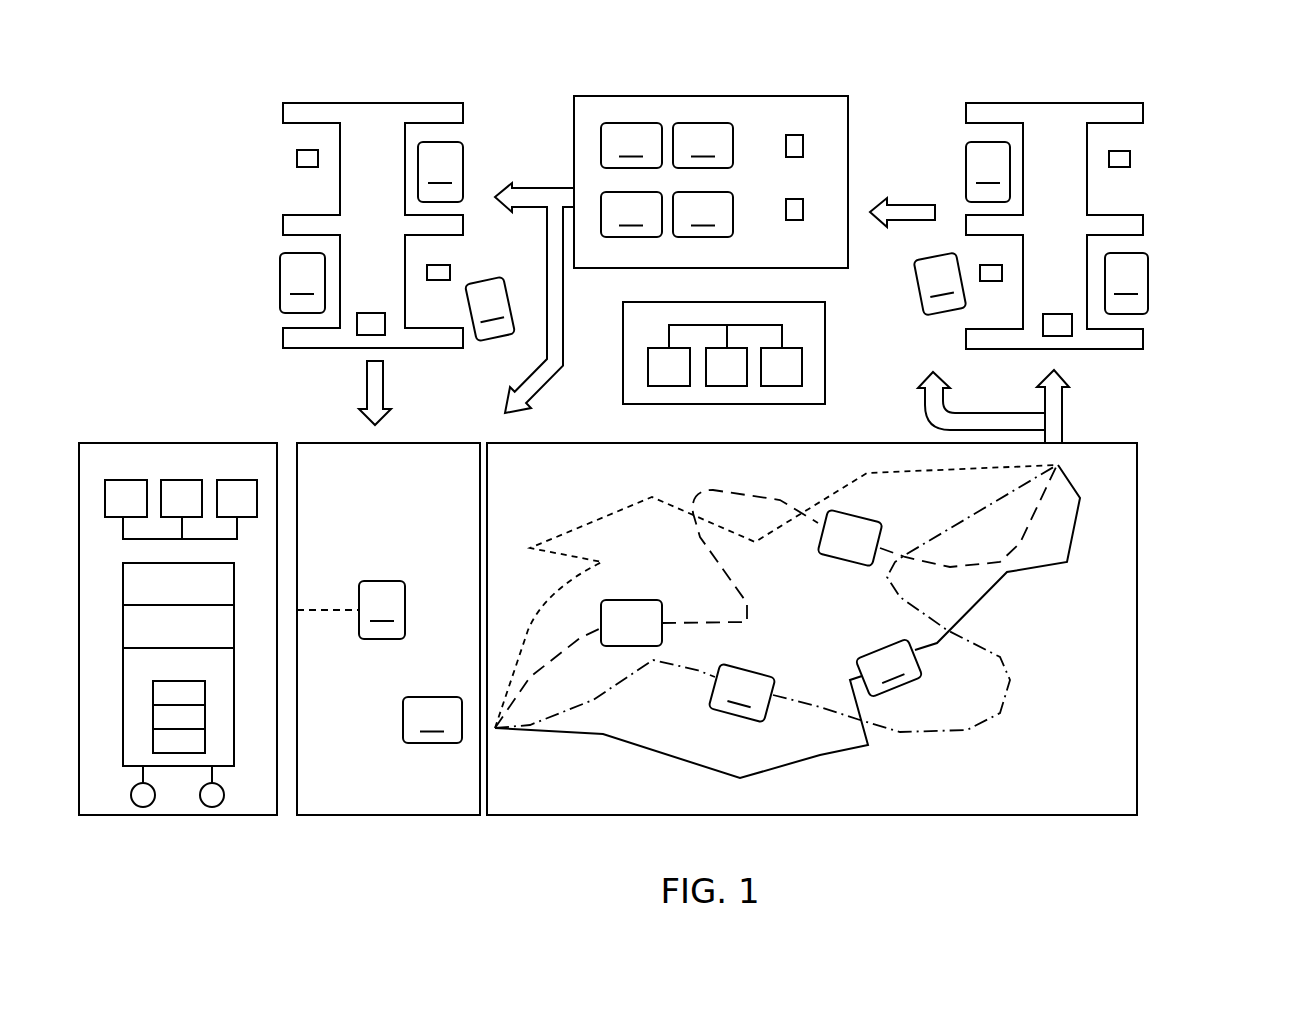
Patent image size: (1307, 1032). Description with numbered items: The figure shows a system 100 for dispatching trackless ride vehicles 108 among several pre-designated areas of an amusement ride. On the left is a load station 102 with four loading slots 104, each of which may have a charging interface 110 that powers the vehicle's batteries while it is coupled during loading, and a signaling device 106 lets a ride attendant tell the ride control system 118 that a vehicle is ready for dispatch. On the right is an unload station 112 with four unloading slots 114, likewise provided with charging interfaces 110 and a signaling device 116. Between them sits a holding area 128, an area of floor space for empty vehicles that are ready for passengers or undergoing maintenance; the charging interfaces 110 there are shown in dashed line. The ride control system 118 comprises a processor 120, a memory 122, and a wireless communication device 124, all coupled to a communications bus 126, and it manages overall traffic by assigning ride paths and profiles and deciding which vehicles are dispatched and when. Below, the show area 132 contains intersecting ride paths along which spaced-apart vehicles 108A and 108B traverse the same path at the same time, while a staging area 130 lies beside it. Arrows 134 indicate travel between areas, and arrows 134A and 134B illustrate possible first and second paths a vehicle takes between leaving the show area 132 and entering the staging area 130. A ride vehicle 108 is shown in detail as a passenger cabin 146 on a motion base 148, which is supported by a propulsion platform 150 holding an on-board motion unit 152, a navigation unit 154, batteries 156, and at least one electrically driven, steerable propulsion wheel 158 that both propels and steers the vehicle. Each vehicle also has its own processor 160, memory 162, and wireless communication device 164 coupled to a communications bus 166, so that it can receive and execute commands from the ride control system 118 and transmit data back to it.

The system 100 is at (1272, 114).
The load station 102 is at (447, 103).
The loading slot 104 is at (471, 129).
The signaling device 106 is at (372, 313).
The ride vehicle 108 is at (170, 472).
The ride vehicle 108A is at (614, 634).
The ride vehicle 108B is at (833, 550).
The charging interface 110 is at (297, 157).
The unload station 112 is at (1113, 103).
The unloading slot 114 is at (950, 128).
The signaling device 116 is at (1060, 314).
The ride control system 118 is at (825, 318).
The processor 120 is at (670, 386).
The memory 122 is at (727, 386).
The wireless communication device 124 is at (782, 386).
The communications bus 126 is at (698, 325).
The holding area 128 is at (718, 96).
The staging area 130 is at (393, 815).
The show area 132 is at (538, 815).
The path 134 is at (383, 386).
The first path 134A is at (563, 297).
The second path 134B is at (538, 188).
The passenger cabin 146 is at (166, 594).
The motion base 148 is at (166, 636).
The propulsion platform 150 is at (166, 674).
The on-board motion unit 152 is at (160, 693).
The navigation unit 154 is at (160, 718).
The batteries 156 is at (160, 742).
The propulsion wheel 158 is at (143, 807).
The processor 160 is at (114, 510).
The memory 162 is at (170, 510).
The wireless communication device 164 is at (225, 510).
The communications bus 166 is at (237, 540).